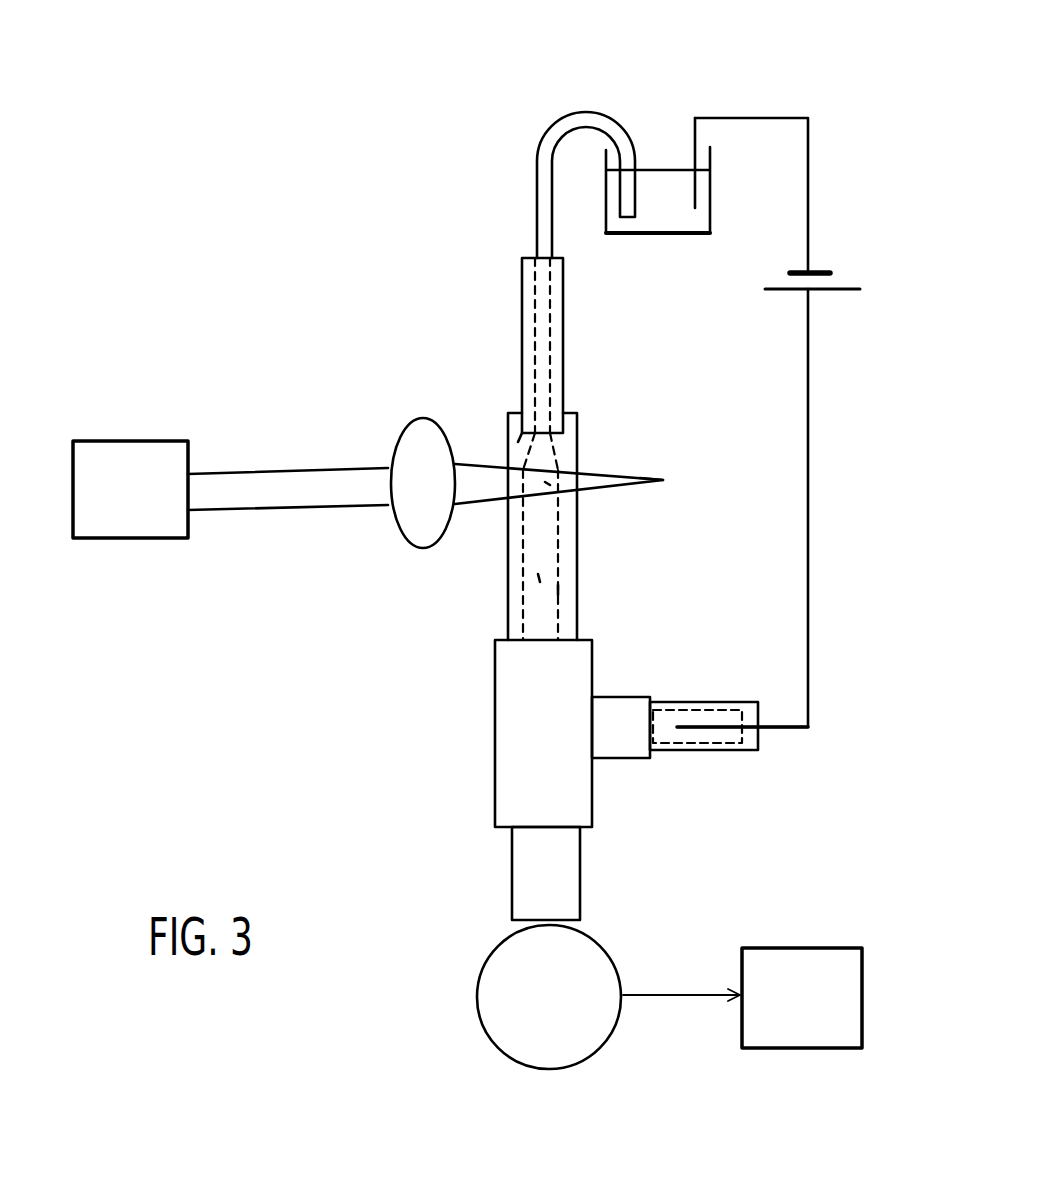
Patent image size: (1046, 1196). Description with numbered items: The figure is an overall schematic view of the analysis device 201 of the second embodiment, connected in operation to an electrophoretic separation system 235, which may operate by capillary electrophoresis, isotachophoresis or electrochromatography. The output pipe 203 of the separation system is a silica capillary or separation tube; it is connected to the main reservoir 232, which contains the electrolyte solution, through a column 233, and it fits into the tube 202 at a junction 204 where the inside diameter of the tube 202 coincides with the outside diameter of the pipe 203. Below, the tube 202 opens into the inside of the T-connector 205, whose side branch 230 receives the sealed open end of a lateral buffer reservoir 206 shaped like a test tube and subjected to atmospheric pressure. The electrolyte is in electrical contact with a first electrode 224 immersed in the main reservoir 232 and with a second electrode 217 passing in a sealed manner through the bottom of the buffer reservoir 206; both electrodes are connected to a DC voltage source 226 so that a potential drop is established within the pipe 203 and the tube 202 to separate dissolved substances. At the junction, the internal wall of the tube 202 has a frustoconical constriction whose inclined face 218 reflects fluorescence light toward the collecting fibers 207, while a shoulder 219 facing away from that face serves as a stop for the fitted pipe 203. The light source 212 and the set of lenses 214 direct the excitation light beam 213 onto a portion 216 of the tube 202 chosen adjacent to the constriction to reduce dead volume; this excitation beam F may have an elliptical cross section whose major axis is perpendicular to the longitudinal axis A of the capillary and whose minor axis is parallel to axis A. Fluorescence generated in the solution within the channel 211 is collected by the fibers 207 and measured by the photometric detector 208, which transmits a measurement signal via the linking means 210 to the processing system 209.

The analysis device 201 is at (377, 358).
The tube 202 is at (577, 543).
The output pipe 203 is at (565, 330).
The junction 204 is at (583, 418).
The T-connector 205 is at (495, 738).
The lateral buffer reservoir 206 is at (712, 702).
The collecting fibers 207 is at (512, 888).
The photometric detector 208 is at (615, 963).
The processing system 209 is at (807, 948).
The linking means 210 is at (687, 995).
The channel 211 is at (558, 590).
The light source 212 is at (128, 441).
The excitation light beam 213 is at (280, 510).
The set of lenses 214 is at (397, 437).
The portion of the tube 216 is at (547, 483).
The second electrode 217 is at (812, 727).
The face 218 is at (555, 455).
The shoulder 219 is at (518, 442).
The first electrode 224 is at (693, 148).
The DC voltage source 226 is at (832, 277).
The side branch 230 is at (630, 758).
The main reservoir 232 is at (662, 233).
The column 233 is at (550, 133).
The electrophoretic separation system 235 is at (697, 85).
The longitudinal axis A is at (540, 578).
The excitation beam F is at (638, 472).